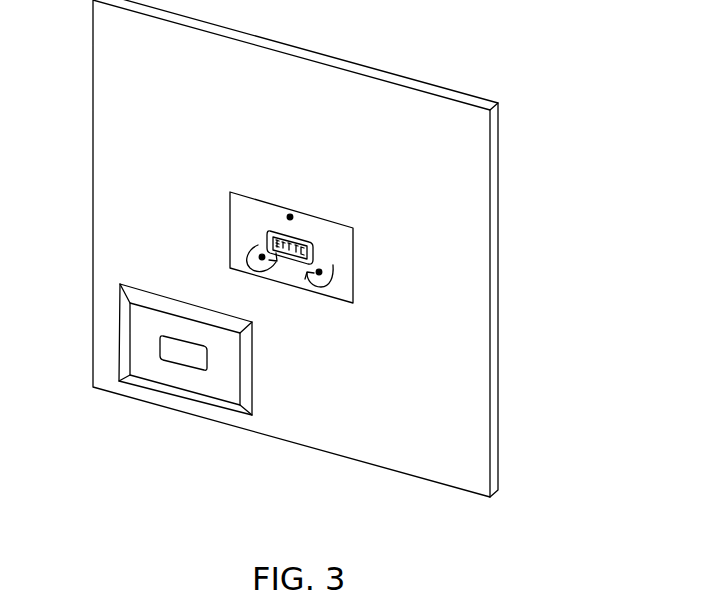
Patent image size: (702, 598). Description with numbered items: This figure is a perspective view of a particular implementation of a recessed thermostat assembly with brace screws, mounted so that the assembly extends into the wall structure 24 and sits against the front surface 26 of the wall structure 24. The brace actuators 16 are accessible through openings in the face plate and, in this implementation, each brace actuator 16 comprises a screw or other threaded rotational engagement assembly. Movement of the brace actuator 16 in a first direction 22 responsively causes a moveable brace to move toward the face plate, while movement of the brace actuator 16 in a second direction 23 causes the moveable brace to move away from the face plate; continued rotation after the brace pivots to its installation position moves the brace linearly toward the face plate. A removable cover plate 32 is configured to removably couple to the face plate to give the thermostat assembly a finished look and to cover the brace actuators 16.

The brace actuator 16 is at (290, 216).
The first direction 22 is at (330, 266).
The second direction 23 is at (250, 270).
The wall structure 24 is at (510, 146).
The front surface 26 is at (446, 152).
The removable cover plate 32 is at (145, 367).